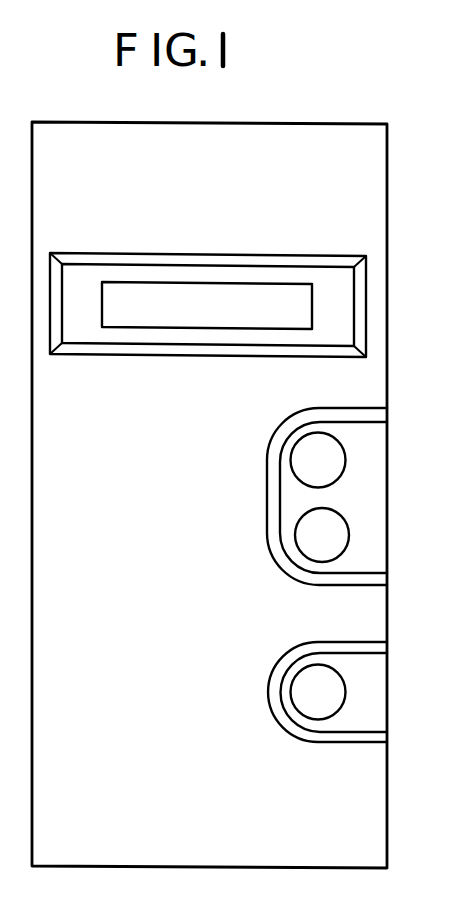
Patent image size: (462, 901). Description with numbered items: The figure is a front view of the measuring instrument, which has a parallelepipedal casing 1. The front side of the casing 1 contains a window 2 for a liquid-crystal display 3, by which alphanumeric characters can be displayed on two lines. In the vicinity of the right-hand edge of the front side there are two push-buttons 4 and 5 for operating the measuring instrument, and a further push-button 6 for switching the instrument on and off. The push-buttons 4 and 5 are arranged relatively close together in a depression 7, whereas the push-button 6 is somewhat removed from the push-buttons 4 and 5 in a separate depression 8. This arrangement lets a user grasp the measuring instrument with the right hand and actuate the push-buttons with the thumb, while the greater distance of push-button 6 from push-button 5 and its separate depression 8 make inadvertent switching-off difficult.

The casing 1 is at (375, 158).
The window 2 is at (357, 279).
The liquid-crystal display 3 is at (300, 306).
The push-button 4 is at (333, 457).
The push-button 5 is at (337, 533).
The push-button 6 is at (333, 680).
The depression 7 is at (372, 500).
The depression 8 is at (370, 705).